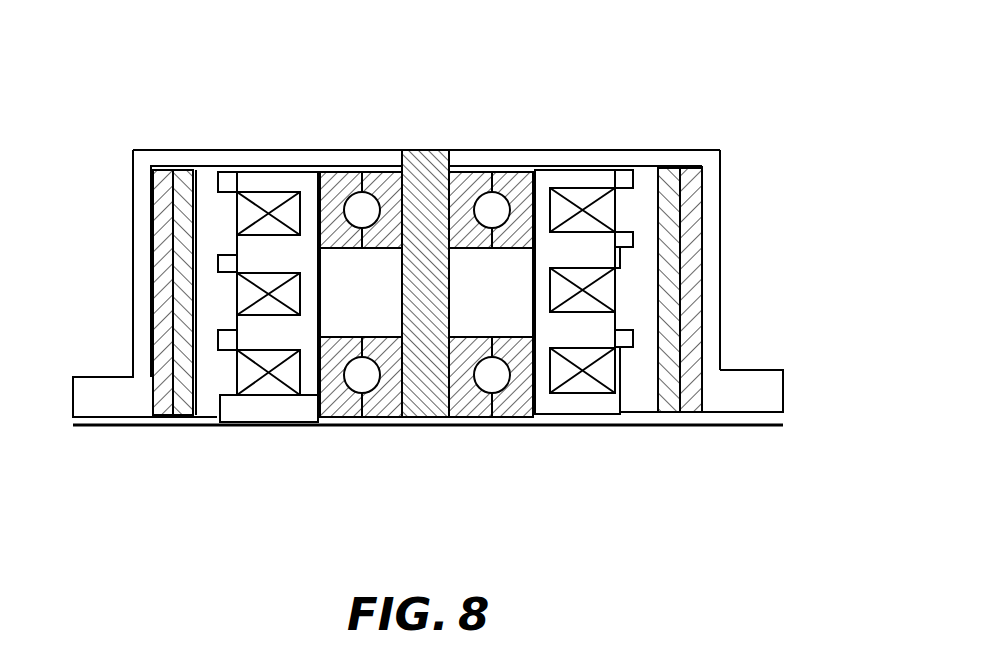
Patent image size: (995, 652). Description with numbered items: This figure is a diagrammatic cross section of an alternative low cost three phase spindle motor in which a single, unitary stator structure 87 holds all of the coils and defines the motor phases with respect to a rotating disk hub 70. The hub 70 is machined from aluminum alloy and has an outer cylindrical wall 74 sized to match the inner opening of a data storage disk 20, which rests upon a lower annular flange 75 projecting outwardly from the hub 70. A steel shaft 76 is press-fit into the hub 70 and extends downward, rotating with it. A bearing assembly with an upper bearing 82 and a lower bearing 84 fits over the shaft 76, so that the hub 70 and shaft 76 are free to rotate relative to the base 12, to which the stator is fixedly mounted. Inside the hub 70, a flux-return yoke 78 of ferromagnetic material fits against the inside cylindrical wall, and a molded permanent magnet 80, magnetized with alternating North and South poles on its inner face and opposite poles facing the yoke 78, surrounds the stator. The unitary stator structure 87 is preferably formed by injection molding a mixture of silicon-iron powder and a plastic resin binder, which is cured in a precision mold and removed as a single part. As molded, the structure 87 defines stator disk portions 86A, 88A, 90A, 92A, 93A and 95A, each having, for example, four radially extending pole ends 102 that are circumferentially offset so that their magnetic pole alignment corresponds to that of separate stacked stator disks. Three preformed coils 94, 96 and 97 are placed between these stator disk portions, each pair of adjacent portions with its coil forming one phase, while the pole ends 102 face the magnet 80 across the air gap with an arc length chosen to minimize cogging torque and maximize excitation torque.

The base 12 is at (157, 430).
The data storage disk 20 is at (632, 101).
The rotating disk hub 70 is at (530, 150).
The outer cylindrical wall 74 is at (133, 192).
The lower annular flange 75 is at (762, 392).
The steel shaft 76 is at (425, 403).
The flux-return yoke 78 is at (690, 413).
The molded permanent magnet 80 is at (667, 413).
The upper bearing 82 is at (383, 172).
The lower bearing 84 is at (470, 412).
The stator disk portion 86A is at (622, 180).
The unitary stator structure 87 is at (553, 415).
The stator disk portion 88A is at (625, 238).
The stator disk portion 90A is at (627, 260).
The stator disk portion 92A is at (227, 323).
The stator disk portion 93A is at (243, 341).
The preformed coil 94 is at (268, 202).
The stator disk portion 95A is at (272, 412).
The preformed coil 96 is at (245, 293).
The preformed coil 97 is at (240, 377).
The pole end 102 is at (622, 343).